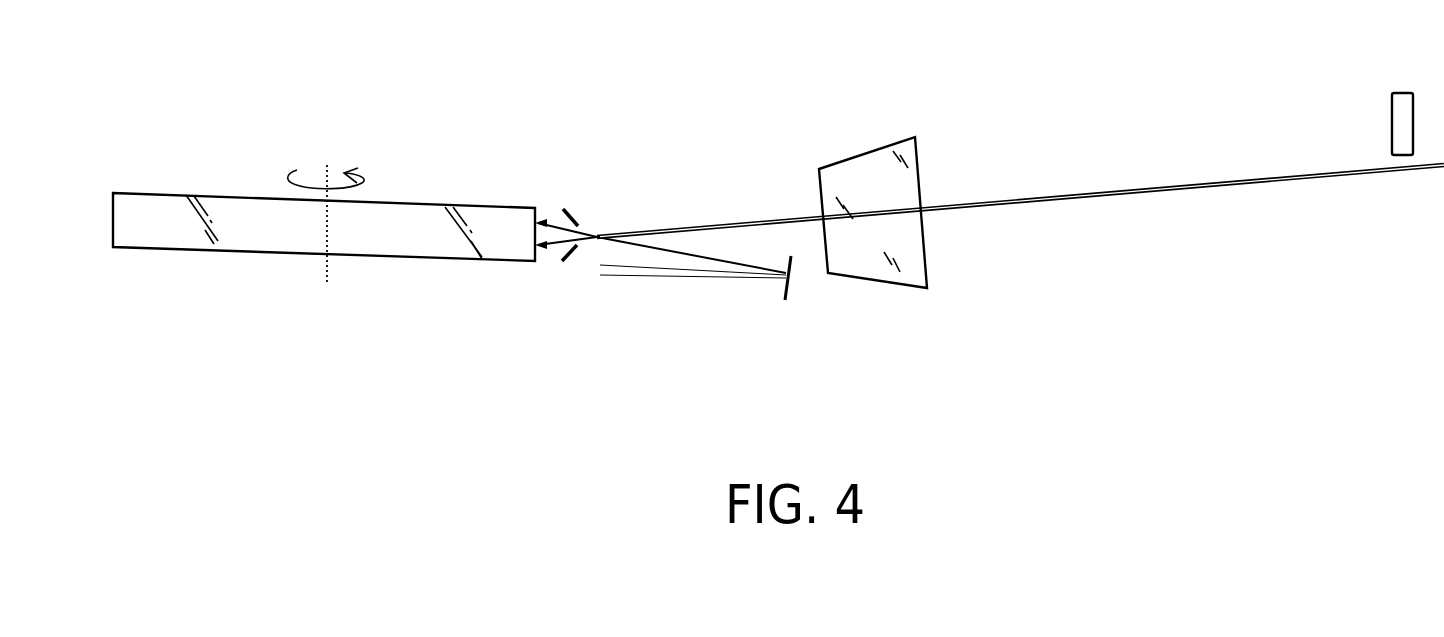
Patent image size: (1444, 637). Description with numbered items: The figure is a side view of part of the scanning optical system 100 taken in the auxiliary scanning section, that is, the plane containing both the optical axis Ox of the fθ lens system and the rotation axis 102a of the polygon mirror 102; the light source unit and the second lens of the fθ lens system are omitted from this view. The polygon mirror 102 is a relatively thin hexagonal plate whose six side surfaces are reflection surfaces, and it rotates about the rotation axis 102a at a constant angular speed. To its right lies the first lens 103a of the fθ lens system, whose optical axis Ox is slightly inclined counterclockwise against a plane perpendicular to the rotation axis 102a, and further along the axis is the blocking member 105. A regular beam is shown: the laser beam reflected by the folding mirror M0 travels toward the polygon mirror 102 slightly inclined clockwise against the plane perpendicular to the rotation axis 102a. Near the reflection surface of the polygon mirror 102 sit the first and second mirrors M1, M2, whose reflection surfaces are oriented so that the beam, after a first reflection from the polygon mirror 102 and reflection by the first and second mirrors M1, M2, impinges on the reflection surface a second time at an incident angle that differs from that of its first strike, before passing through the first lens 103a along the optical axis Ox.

The scanning optical system 100 is at (612, 92).
The polygon mirror 102 is at (425, 201).
The rotation axis 102a is at (329, 262).
The first lens 103a is at (872, 151).
The blocking member 105 is at (1405, 92).
The folding mirror M0 is at (791, 292).
The first mirror M1 is at (571, 215).
The second mirror M2 is at (567, 259).
The optical axis Ox is at (1197, 193).